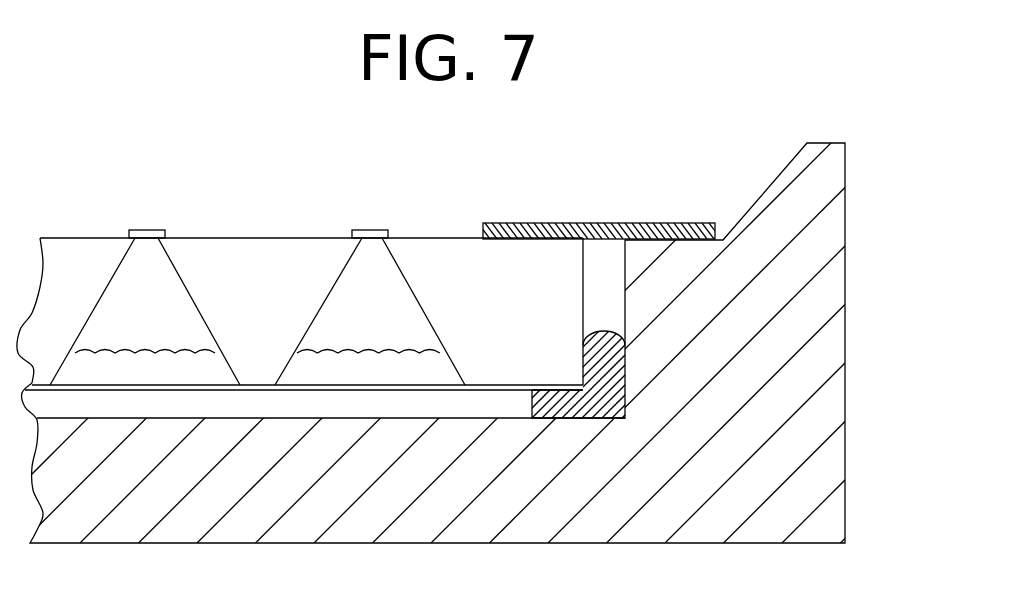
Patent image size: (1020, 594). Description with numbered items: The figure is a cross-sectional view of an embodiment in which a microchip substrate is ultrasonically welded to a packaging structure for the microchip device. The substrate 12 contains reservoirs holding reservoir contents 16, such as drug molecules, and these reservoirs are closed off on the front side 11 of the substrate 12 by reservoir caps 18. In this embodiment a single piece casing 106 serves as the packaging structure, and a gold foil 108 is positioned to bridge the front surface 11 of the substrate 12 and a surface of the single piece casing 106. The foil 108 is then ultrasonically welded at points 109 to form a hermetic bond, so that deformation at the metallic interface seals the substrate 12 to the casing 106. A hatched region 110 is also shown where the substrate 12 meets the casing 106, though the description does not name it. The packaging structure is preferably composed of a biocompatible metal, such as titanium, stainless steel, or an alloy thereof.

The front side 11 is at (442, 237).
The substrate 12 is at (515, 303).
The reservoir contents 16 is at (158, 320).
The reservoir caps 18 is at (148, 228).
The single piece casing 106 is at (708, 375).
The gold foil 108 is at (607, 222).
The points 109 is at (670, 222).
The filler 110 is at (595, 383).